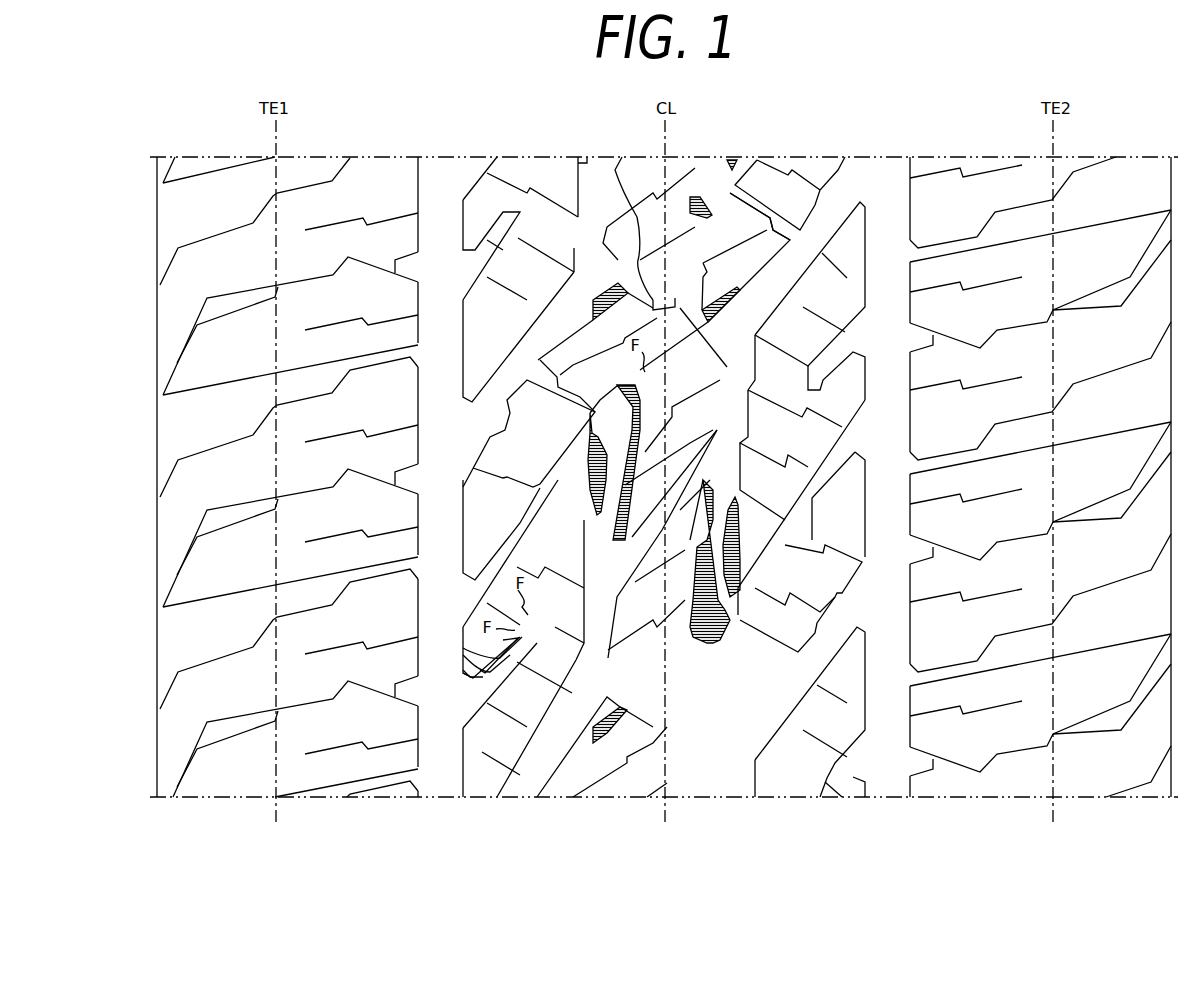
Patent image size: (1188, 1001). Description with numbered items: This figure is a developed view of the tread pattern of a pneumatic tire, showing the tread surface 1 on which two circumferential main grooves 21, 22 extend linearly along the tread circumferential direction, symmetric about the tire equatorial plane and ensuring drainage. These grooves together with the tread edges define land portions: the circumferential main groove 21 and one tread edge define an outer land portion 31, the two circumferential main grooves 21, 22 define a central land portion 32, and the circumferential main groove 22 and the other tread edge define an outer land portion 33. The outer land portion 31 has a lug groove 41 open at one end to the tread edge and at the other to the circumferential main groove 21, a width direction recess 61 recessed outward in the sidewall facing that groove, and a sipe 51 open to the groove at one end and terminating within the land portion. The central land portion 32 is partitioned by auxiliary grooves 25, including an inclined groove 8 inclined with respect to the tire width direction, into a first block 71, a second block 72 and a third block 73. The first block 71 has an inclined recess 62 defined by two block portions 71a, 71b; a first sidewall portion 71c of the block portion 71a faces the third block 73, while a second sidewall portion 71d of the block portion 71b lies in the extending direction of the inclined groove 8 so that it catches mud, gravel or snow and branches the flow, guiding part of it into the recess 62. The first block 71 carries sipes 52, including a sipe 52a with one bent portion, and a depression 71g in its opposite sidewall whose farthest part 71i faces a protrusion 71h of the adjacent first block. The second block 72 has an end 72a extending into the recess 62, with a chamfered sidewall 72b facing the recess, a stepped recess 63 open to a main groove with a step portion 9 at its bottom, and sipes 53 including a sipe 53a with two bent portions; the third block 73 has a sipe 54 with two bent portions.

The tread surface 1 is at (1138, 124).
The circumferential main groove 21 is at (438, 228).
The circumferential main groove 22 is at (884, 235).
The outer land portion 31 is at (315, 815).
The central land portion 32 is at (625, 815).
The outer land portion 33 is at (1007, 815).
The lug groove 41 is at (325, 588).
The sipe 51 is at (322, 639).
The sipes 52 is at (677, 458).
The sipe 52a is at (660, 357).
The sipes 53 is at (537, 680).
The sipe 53a is at (548, 628).
The sipe 54 is at (505, 430).
The width direction recess 61 is at (410, 690).
The recess 62 is at (617, 418).
The stepped recess 63 is at (478, 692).
The first block 71 is at (690, 305).
The block portion 71a is at (575, 312).
The block portion 71b is at (640, 423).
The first sidewall portion 71c is at (572, 350).
The second sidewall portion 71d is at (622, 530).
The depression 71g is at (618, 260).
The protrusion 71h is at (678, 298).
The part of depression 71i is at (653, 300).
The second block 72 is at (555, 607).
The end 72a is at (577, 471).
The sidewall 72b is at (596, 482).
The third block 73 is at (505, 383).
The inclined groove 8 is at (613, 584).
The step portion 9 is at (488, 665).
The auxiliary grooves 25 is at (592, 700).